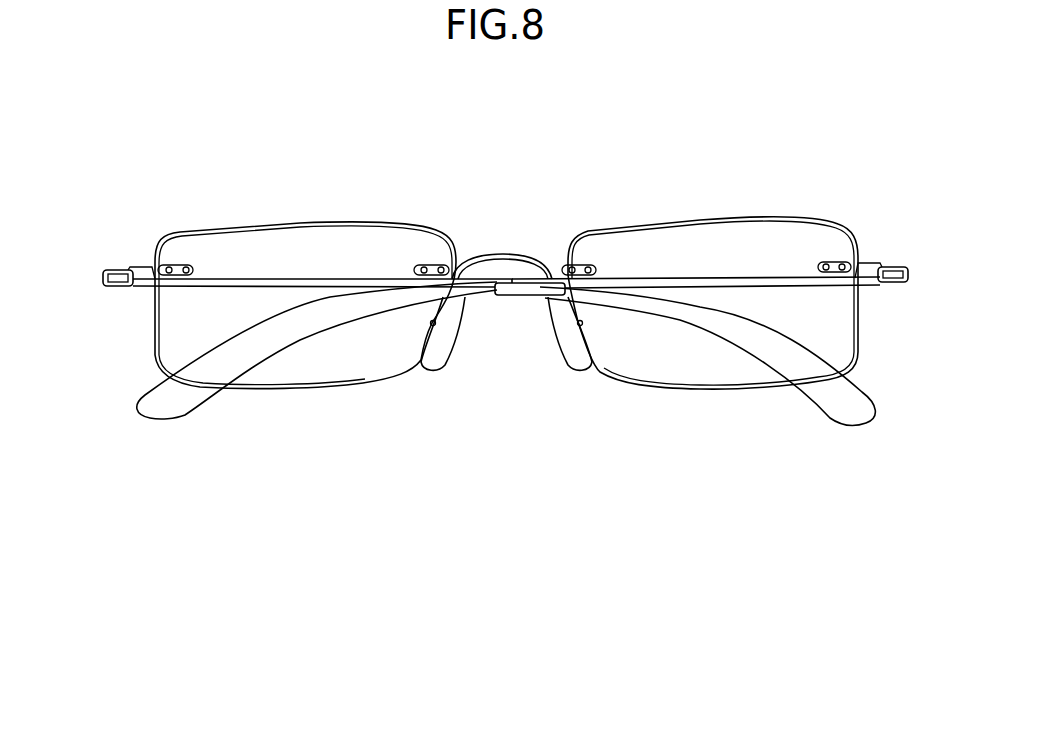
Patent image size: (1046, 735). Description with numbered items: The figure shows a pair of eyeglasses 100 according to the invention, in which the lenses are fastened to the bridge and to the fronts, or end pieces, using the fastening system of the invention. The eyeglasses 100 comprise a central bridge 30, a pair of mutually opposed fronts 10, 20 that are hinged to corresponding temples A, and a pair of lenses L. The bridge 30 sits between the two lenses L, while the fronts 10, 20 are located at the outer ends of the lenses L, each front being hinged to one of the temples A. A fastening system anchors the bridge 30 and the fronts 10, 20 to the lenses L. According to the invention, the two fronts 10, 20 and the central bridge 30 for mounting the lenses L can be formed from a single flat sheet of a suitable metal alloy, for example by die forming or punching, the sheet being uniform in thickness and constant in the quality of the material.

The eyeglasses 100 is at (508, 335).
The front 10 is at (132, 253).
The front 20 is at (883, 253).
The bridge 30 is at (513, 240).
The lens L is at (265, 245).
The temple A is at (730, 284).